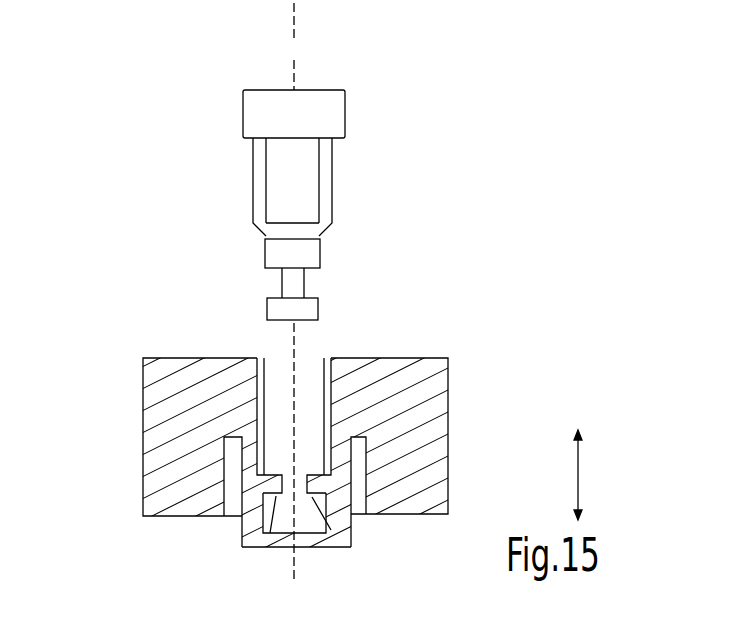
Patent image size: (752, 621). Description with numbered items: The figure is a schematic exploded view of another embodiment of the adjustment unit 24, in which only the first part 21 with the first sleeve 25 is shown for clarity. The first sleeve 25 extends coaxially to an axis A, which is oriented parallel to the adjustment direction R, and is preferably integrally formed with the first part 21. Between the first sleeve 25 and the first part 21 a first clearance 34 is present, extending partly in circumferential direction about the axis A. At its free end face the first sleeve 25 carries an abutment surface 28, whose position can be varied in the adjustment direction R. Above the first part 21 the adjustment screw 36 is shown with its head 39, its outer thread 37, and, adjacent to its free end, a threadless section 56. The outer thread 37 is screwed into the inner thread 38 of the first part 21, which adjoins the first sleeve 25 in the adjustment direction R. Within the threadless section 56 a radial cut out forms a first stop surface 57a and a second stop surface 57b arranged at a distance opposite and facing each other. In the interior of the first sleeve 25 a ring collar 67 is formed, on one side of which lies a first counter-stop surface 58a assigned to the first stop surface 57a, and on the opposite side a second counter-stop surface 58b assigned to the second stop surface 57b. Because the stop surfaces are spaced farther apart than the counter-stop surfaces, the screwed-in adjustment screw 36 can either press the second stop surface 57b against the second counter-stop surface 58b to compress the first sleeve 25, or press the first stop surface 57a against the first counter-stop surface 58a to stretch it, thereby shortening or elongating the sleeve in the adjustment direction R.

The axis A is at (293, 40).
The head 39 is at (305, 107).
The outer thread 37 is at (332, 181).
The adjustment screw 36 is at (380, 153).
The adjustment unit 24 is at (580, 152).
The threadless section 56 is at (319, 281).
The first stop surface 57a is at (322, 277).
The second stop surface 57b is at (322, 288).
The first part 21 is at (448, 378).
The inner thread 38 is at (253, 392).
The first clearance 34 is at (243, 482).
The first sleeve 25 is at (250, 510).
The first counter-stop surface 58a is at (363, 437).
The second counter-stop surface 58b is at (355, 535).
The ring collar 67 is at (270, 540).
The abutment surface 28 is at (332, 558).
The adjustment direction R is at (578, 470).